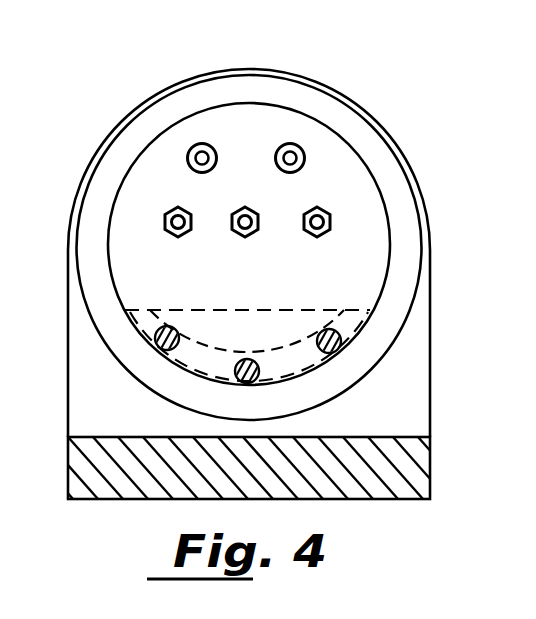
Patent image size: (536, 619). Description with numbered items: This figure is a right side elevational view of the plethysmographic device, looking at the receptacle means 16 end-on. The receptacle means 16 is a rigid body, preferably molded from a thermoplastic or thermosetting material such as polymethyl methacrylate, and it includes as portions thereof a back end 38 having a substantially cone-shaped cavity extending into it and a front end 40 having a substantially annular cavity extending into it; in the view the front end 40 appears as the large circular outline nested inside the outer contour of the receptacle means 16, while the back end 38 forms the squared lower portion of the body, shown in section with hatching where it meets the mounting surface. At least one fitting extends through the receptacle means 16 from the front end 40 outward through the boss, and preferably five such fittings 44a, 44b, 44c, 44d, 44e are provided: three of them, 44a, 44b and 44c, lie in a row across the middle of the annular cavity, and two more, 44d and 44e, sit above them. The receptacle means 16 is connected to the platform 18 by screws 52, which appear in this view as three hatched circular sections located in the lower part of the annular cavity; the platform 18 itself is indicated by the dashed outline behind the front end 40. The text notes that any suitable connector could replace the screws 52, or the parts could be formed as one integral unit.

The receptacle means 16 is at (383, 115).
The platform 18 is at (343, 317).
The back end 38 is at (417, 312).
The front end 40 is at (140, 180).
The fitting 44a is at (164, 222).
The fitting 44b is at (243, 231).
The fitting 44c is at (332, 218).
The fitting 44d is at (290, 142).
The fitting 44e is at (202, 142).
The screws 52 is at (158, 345).